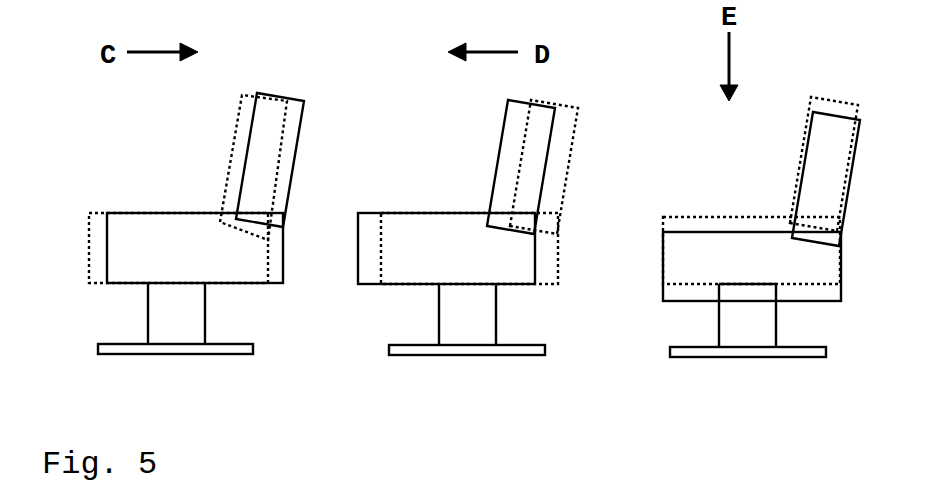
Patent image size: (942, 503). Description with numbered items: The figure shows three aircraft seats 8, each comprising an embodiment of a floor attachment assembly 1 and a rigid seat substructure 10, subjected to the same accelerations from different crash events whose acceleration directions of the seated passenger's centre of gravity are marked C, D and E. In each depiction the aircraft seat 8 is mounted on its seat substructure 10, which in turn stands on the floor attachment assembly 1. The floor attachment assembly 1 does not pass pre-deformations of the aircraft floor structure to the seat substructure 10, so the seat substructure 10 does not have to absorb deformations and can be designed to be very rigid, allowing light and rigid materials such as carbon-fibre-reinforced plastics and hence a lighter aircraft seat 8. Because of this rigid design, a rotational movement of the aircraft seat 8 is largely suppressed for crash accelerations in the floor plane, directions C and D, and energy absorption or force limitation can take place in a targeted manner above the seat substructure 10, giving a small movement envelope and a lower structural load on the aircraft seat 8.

The floor attachment assembly 1 is at (223, 348).
The aircraft seat 8 is at (195, 227).
The seat substructure 10 is at (182, 318).